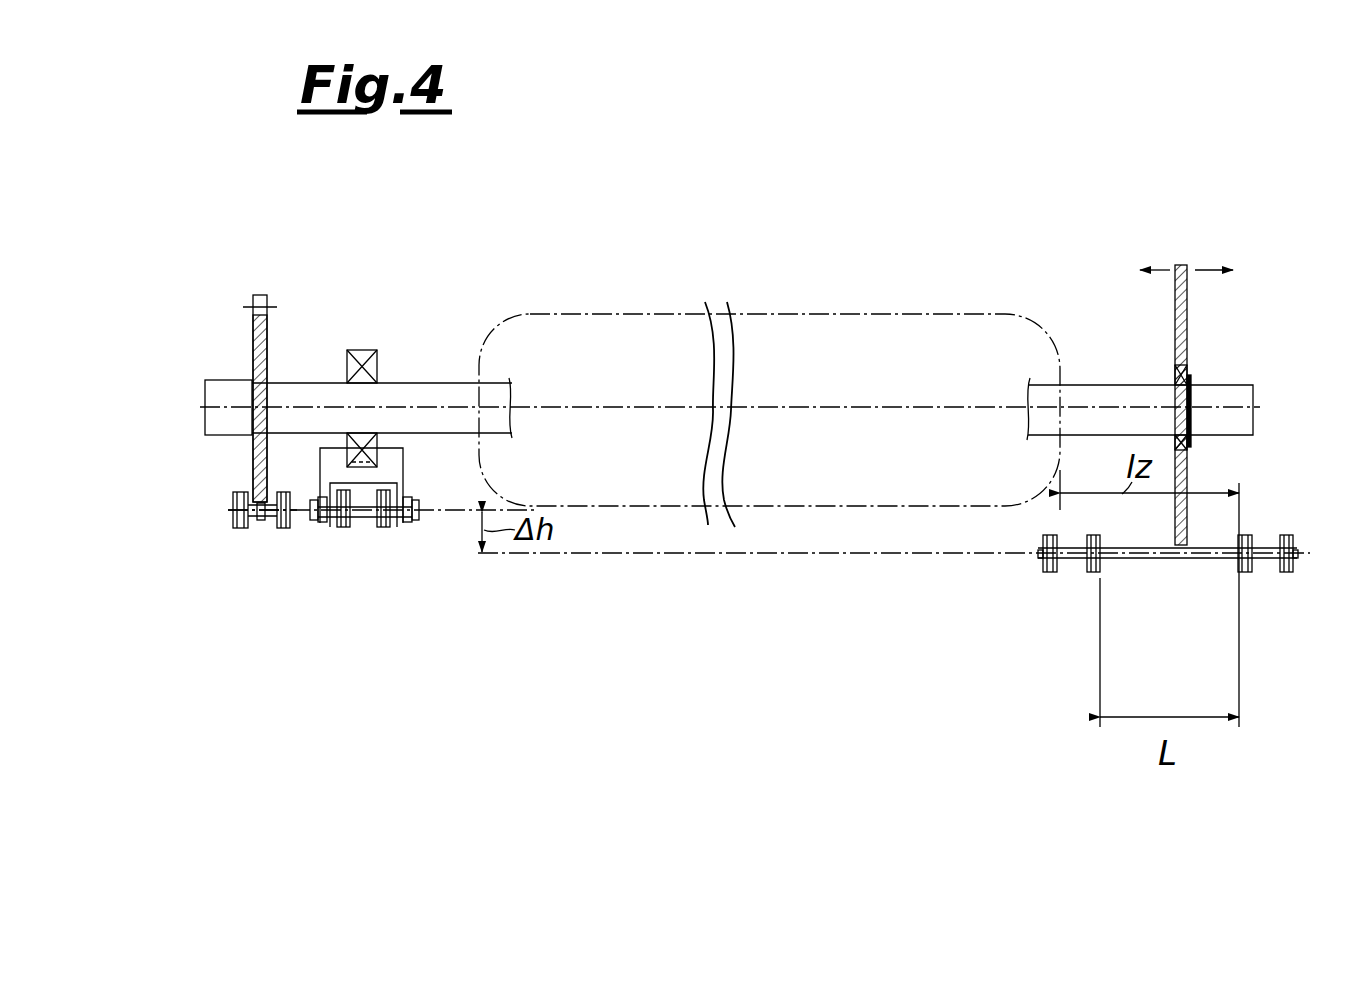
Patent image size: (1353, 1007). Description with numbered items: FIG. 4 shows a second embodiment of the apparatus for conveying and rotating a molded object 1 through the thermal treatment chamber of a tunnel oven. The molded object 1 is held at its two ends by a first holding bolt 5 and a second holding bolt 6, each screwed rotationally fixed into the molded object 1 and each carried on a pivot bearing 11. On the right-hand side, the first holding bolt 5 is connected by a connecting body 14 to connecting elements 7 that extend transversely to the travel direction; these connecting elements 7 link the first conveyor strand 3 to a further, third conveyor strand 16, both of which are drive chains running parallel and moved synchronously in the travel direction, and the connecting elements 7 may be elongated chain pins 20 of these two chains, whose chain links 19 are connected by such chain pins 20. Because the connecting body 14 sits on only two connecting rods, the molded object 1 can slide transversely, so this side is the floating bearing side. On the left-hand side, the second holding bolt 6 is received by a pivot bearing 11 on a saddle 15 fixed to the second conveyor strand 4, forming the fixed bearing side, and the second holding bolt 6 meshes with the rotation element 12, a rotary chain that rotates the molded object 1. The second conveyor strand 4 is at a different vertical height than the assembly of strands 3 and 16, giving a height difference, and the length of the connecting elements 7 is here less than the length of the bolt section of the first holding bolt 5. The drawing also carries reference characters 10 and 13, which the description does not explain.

The molded object 1 is at (850, 314).
The first conveyor strand 3 is at (1280, 590).
The second conveyor strand 4 is at (381, 576).
The first holding bolt 5 is at (1228, 385).
The second holding bolt 6 is at (298, 380).
The connecting element 7 is at (1187, 560).
The left support 10 is at (193, 398).
The pivot bearing 11 is at (358, 358).
The rotation element 12 is at (247, 545).
The left support plate 13 is at (253, 340).
The connecting body 14 is at (1187, 300).
The saddle 15 is at (403, 468).
The third conveyor strand 16 is at (1072, 560).
The chain link 19 is at (343, 527).
The chain pin 20 is at (363, 514).